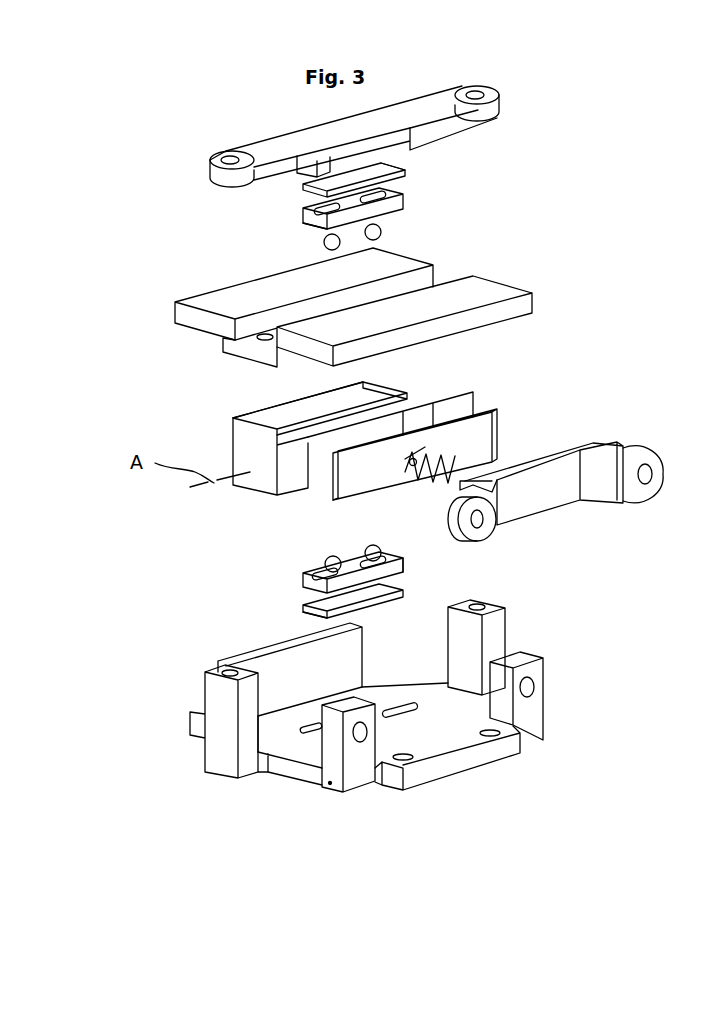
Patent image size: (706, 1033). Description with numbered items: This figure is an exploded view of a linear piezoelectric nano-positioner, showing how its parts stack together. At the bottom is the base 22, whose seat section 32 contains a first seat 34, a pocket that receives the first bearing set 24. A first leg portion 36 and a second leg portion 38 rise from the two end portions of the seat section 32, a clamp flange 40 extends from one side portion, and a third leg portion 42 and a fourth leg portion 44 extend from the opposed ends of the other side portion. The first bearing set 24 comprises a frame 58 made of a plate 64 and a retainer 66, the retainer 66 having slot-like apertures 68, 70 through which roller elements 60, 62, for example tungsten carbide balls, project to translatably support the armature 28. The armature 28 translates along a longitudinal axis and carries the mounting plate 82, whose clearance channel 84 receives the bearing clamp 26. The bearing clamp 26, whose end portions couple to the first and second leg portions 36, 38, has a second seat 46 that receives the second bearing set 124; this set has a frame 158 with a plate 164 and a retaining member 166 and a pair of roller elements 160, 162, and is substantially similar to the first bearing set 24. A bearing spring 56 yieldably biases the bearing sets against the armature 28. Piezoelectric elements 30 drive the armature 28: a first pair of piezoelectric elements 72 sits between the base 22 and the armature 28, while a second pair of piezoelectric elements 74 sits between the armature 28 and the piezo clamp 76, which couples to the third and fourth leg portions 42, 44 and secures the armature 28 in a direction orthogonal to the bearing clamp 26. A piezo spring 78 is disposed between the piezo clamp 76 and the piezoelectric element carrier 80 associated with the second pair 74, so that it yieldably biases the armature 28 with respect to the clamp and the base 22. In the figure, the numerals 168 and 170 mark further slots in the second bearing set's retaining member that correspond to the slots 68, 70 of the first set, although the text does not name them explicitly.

The base 22 is at (320, 702).
The first bearing set 24 is at (452, 574).
The bearing clamp 26 is at (240, 142).
The armature 28 is at (250, 492).
The piezoelectric elements 30 is at (266, 445).
The seat section 32 is at (330, 783).
The first seat 34 is at (380, 706).
The first leg portion 36 is at (203, 688).
The second leg portion 38 is at (508, 630).
The clamp flange 40 is at (362, 630).
The third leg portion 42 is at (320, 757).
The fourth leg portion 44 is at (548, 702).
The second seat 46 is at (407, 127).
The bearing spring 56 is at (427, 137).
The frame 58 is at (290, 592).
The roller element 60 is at (373, 541).
The roller element 62 is at (318, 559).
The plate 64 is at (303, 612).
The retainer 66 is at (369, 552).
The aperture 68 is at (388, 542).
The aperture 70 is at (340, 556).
The first pair of piezoelectric elements 72 is at (388, 383).
The second pair of piezoelectric elements 74 is at (447, 450).
The piezo clamp 76 is at (525, 470).
The piezo spring 78 is at (398, 431).
The piezoelectric element carrier 80 is at (332, 502).
The mounting plate 82 is at (174, 316).
The clearance channel 84 is at (437, 264).
The second bearing set 124 is at (200, 187).
The frame 158 is at (440, 168).
The roller element 160 is at (393, 228).
The roller element 162 is at (316, 242).
The plate 164 is at (296, 197).
The retaining member 166 is at (296, 227).
The right slot 168 is at (393, 196).
The left slot 170 is at (312, 212).